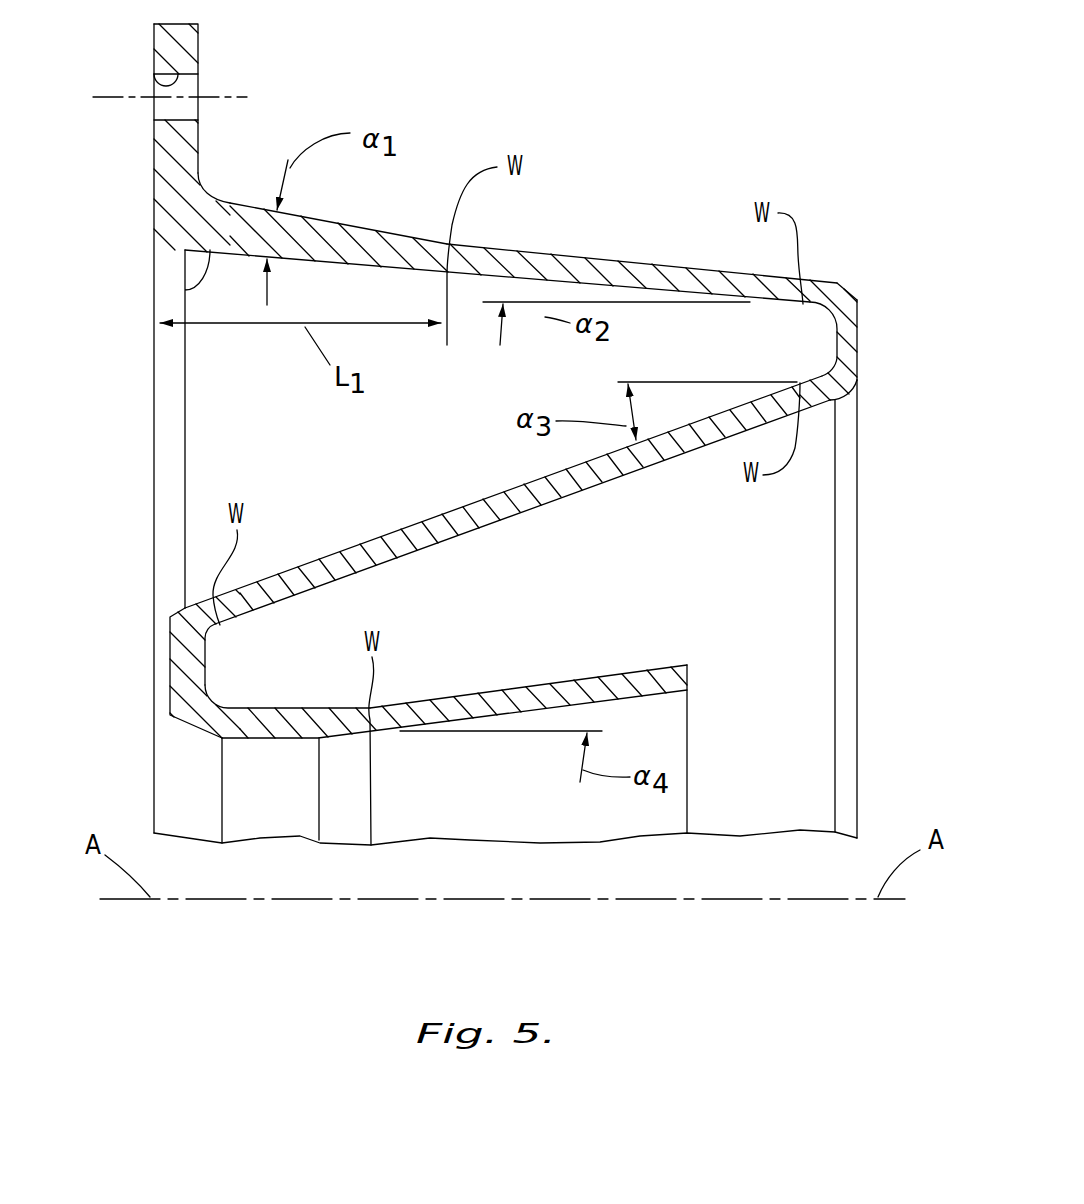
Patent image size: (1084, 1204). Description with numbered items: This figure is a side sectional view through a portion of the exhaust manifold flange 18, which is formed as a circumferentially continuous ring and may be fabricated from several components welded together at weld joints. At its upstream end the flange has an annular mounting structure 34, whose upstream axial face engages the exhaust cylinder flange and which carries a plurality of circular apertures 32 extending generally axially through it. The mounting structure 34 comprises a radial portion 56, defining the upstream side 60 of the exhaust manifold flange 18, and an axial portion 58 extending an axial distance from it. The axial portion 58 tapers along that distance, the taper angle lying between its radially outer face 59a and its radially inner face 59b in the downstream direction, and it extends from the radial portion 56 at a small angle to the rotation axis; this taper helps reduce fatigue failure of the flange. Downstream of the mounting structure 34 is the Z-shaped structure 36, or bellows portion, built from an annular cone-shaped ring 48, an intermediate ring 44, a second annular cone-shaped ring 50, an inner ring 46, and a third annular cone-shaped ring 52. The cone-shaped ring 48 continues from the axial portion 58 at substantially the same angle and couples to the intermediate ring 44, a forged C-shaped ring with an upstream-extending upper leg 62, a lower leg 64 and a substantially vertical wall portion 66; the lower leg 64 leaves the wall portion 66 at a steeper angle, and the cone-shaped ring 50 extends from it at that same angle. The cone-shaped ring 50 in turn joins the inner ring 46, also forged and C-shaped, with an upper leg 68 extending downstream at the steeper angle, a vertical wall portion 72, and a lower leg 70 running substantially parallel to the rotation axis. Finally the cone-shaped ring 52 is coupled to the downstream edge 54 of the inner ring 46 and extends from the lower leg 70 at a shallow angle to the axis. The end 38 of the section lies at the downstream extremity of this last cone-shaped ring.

The exhaust manifold flange 18 is at (660, 93).
The aperture 32 is at (154, 86).
The mounting structure 34 is at (205, 35).
The Z-shaped structure 36 is at (856, 291).
The end of third wall 38 is at (687, 678).
The intermediate ring 44 is at (862, 362).
The inner ring 46 is at (167, 689).
The annular cone-shaped ring 48 is at (667, 266).
The annular cone-shaped ring 50 is at (508, 492).
The annular cone-shaped ring 52 is at (535, 684).
The downstream edge 54 is at (368, 730).
The radial portion 56 is at (154, 153).
The axial portion 58 is at (360, 230).
The radially outer face 59a is at (232, 197).
The radially inner face 59b is at (183, 287).
The upstream side 60 is at (142, 204).
The upper leg 62 is at (810, 303).
The lower leg 64 is at (815, 398).
The wall portion 66 is at (858, 323).
The upper leg 68 is at (217, 624).
The lower leg 70 is at (303, 707).
The wall portion 72 is at (170, 632).